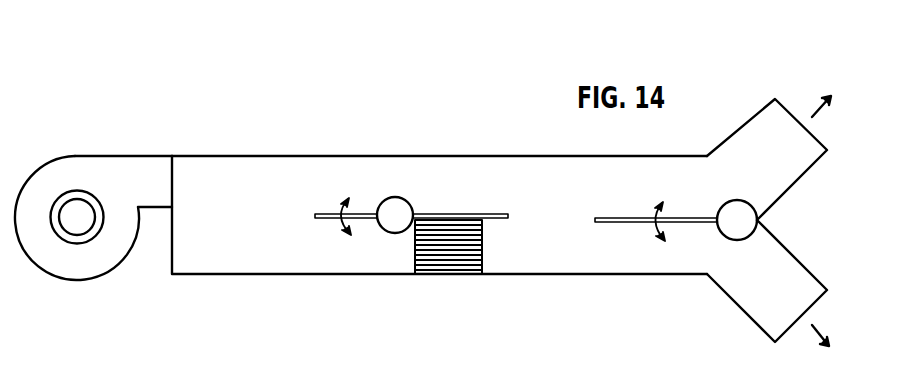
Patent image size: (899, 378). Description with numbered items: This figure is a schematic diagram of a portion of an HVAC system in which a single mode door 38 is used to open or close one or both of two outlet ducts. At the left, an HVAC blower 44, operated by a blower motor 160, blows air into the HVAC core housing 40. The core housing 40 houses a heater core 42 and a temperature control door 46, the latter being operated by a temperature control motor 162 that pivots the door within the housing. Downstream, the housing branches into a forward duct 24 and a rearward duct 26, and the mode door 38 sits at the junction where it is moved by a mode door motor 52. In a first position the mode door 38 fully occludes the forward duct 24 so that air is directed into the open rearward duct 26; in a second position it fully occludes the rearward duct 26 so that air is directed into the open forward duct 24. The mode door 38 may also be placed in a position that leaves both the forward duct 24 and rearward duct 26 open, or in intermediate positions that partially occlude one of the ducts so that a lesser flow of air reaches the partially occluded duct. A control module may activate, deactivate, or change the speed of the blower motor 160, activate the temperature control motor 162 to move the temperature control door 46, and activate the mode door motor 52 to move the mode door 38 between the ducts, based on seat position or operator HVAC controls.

The HVAC blower 44 is at (98, 154).
The blower motor 160 is at (101, 230).
The HVAC core housing 40 is at (258, 275).
The temperature control door 46 is at (323, 213).
The temperature control motor 162 is at (395, 197).
The heater core 42 is at (480, 247).
The mode door 38 is at (628, 217).
The mode door motor 52 is at (748, 203).
The forward duct 24 is at (752, 120).
The rearward duct 26 is at (720, 287).